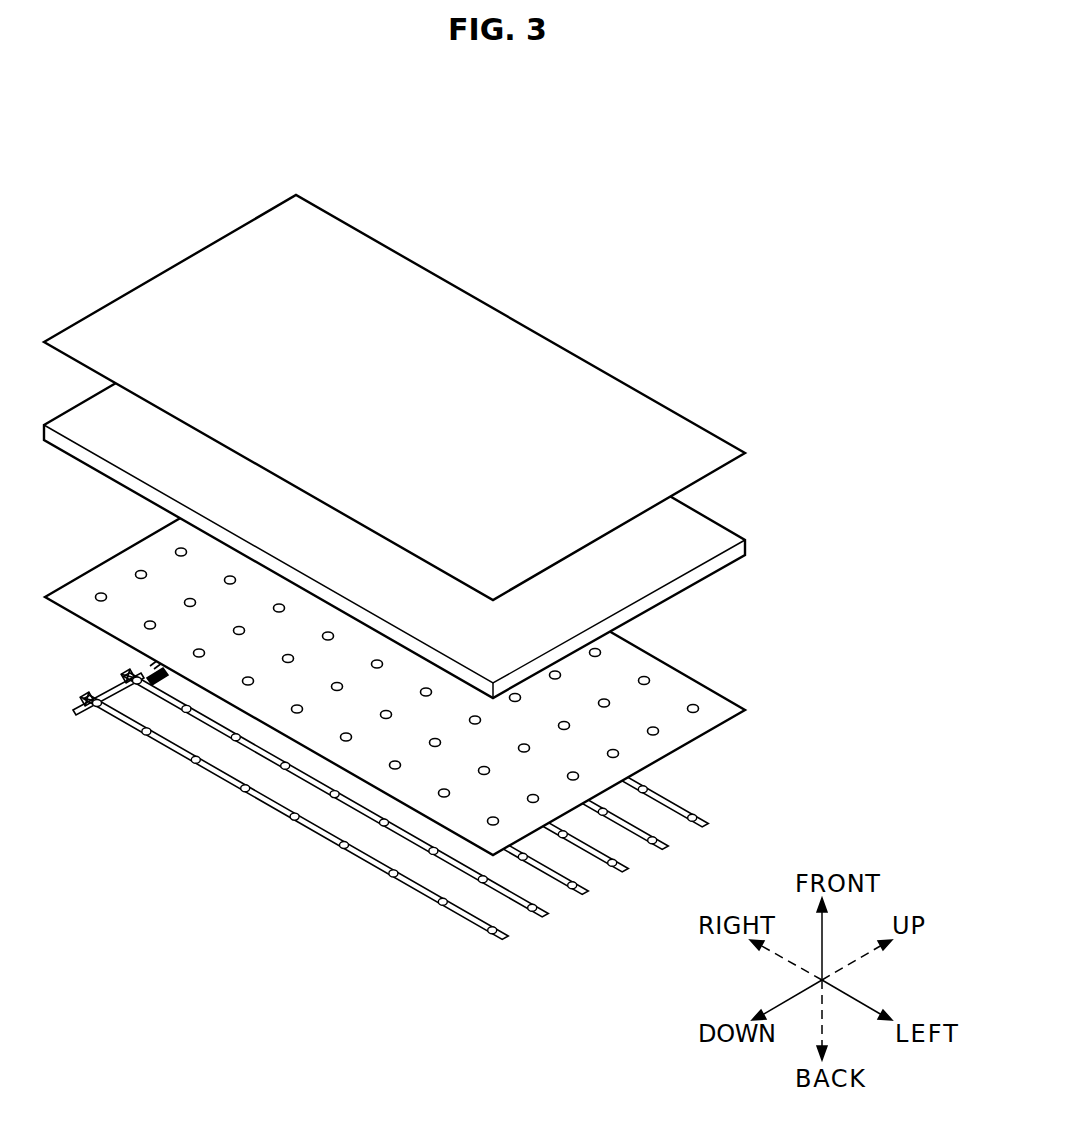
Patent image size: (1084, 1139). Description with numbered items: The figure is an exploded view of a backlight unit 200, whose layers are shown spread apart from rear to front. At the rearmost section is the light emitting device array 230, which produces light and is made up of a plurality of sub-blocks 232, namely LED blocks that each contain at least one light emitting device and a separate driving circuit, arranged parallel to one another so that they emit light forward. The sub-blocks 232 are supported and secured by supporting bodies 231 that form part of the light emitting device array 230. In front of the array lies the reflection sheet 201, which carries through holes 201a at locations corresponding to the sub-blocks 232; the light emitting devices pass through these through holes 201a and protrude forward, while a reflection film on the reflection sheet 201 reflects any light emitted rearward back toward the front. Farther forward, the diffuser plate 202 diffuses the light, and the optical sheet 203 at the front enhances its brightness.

The backlight unit 200 is at (692, 187).
The reflection sheet 201 is at (429, 652).
The through holes 201a is at (694, 704).
The diffuser plate 202 is at (709, 535).
The optical sheet 203 is at (735, 449).
The light emitting device array 230 is at (390, 789).
The supporting bodies 231 is at (383, 866).
The sub-blocks 232 is at (263, 912).